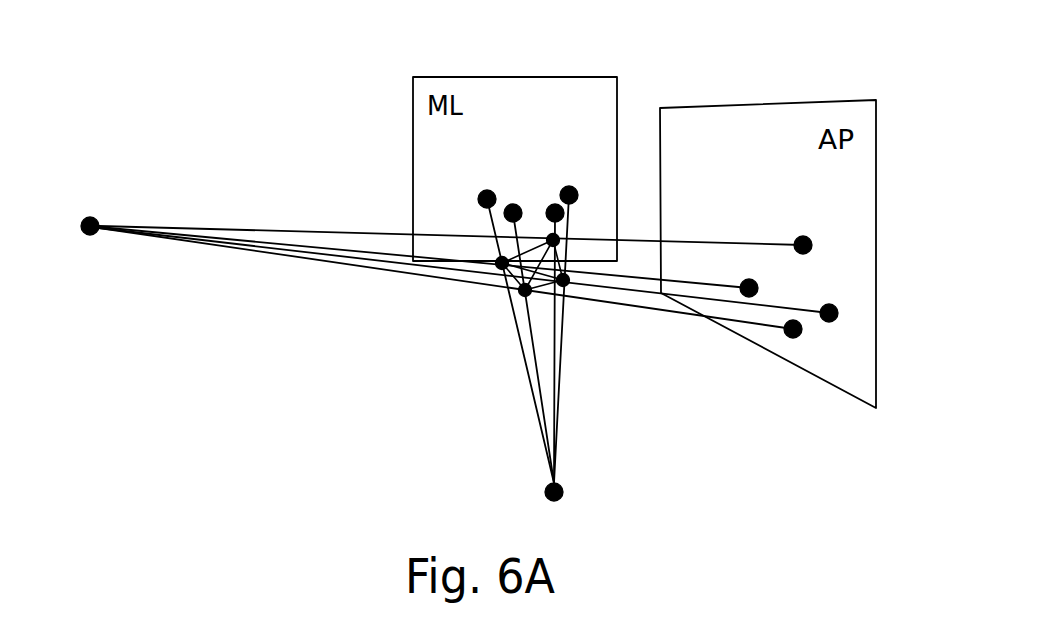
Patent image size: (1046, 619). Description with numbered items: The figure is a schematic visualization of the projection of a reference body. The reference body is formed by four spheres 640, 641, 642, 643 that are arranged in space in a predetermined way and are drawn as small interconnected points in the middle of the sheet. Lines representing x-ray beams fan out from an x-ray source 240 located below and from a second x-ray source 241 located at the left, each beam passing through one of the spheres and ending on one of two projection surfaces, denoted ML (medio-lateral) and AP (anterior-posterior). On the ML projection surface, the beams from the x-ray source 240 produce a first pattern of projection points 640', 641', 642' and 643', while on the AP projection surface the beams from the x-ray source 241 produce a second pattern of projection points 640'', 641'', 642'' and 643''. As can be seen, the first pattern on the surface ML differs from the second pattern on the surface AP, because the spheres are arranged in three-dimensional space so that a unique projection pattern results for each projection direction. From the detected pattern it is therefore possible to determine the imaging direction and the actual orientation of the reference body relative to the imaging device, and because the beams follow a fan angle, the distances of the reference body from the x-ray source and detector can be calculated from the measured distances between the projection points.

The x-ray source 241 is at (88, 217).
The x-ray source 240 is at (563, 492).
The projection point 640' is at (409, 175).
The projection point 641' is at (487, 123).
The projection point 642' is at (582, 123).
The projection point 643' is at (640, 125).
The sphere 640 is at (437, 323).
The sphere 641 is at (468, 359).
The sphere 642 is at (620, 352).
The sphere 643 is at (635, 313).
The projection point 640'' is at (851, 273).
The projection point 641'' is at (873, 363).
The projection point 642'' is at (891, 339).
The projection point 643'' is at (878, 218).